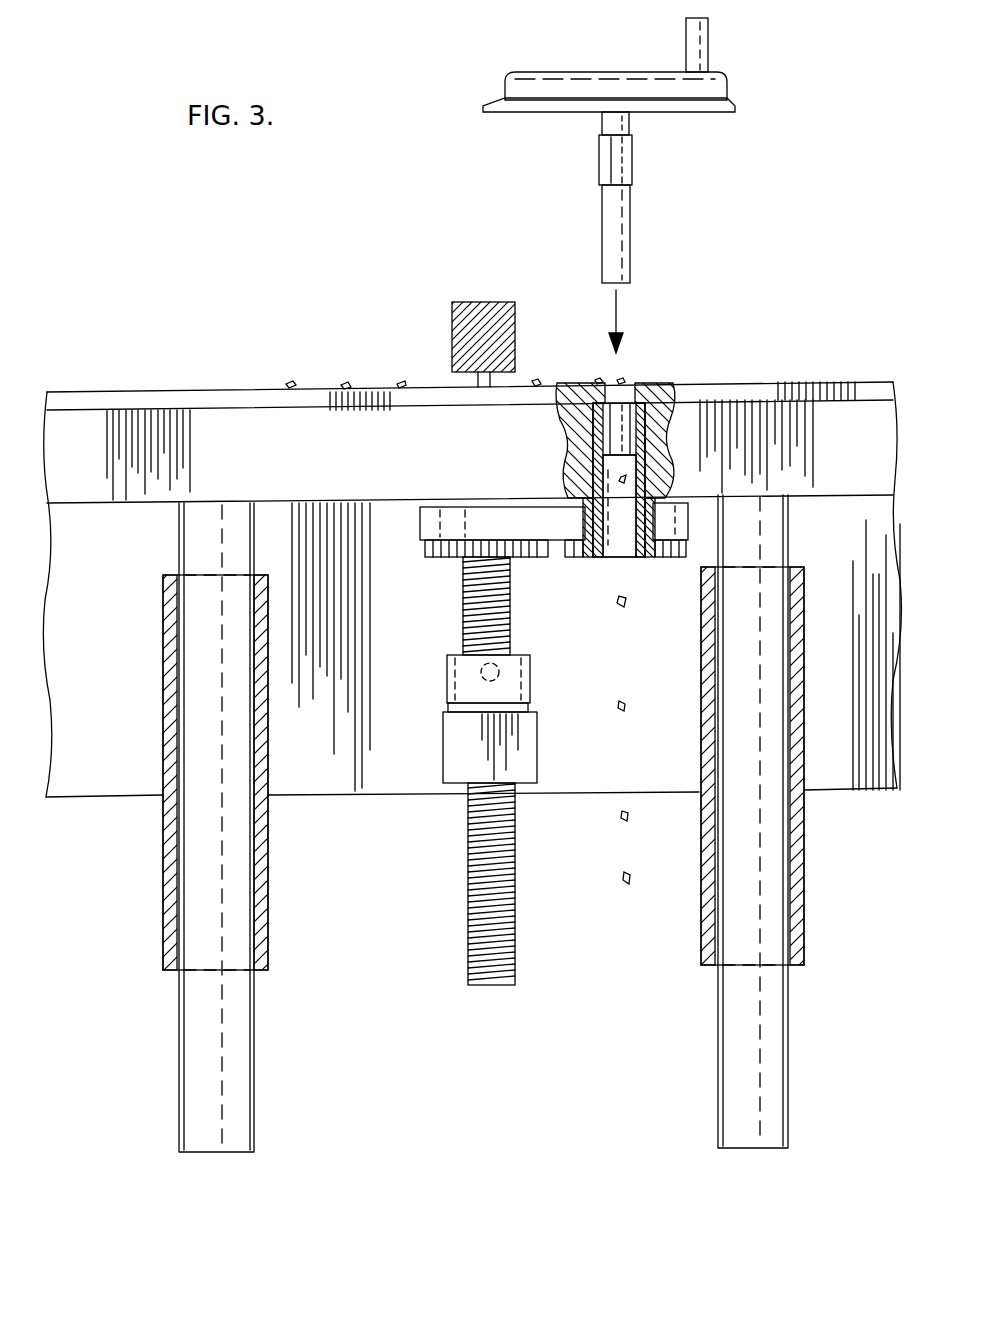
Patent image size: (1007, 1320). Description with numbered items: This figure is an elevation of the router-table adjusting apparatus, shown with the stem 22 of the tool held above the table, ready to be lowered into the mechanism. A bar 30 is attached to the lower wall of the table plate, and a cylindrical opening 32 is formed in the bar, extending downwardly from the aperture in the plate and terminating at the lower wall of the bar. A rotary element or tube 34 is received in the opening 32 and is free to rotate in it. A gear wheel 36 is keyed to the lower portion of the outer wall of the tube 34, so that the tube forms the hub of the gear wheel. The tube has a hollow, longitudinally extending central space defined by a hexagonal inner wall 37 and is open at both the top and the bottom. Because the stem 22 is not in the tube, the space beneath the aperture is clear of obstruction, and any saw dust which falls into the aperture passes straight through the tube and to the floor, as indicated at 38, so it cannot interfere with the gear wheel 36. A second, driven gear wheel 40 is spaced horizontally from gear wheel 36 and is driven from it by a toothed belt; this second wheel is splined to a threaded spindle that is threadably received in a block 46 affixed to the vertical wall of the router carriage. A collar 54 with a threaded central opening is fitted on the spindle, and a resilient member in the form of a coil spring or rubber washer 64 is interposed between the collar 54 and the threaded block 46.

The stem 22 is at (598, 163).
The bar 30 is at (856, 383).
The cylindrical opening 32 is at (636, 478).
The tube 34 is at (605, 432).
The gear wheel 36 is at (688, 518).
The hexagonal inner wall 37 is at (624, 558).
The saw dust 38 is at (621, 607).
The second gear wheel 40 is at (445, 505).
The block 46 is at (450, 758).
The collar 54 is at (447, 672).
The rubber washer 64 is at (448, 708).